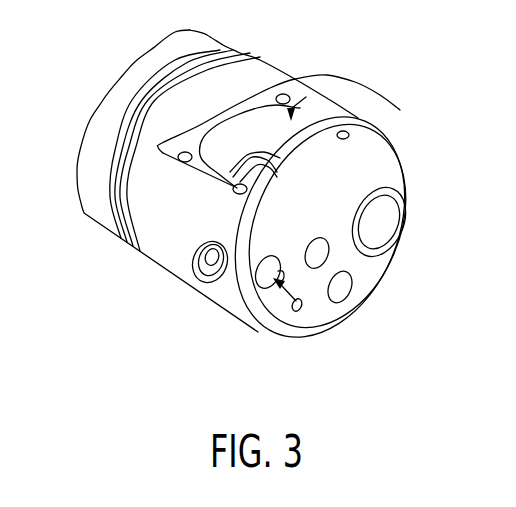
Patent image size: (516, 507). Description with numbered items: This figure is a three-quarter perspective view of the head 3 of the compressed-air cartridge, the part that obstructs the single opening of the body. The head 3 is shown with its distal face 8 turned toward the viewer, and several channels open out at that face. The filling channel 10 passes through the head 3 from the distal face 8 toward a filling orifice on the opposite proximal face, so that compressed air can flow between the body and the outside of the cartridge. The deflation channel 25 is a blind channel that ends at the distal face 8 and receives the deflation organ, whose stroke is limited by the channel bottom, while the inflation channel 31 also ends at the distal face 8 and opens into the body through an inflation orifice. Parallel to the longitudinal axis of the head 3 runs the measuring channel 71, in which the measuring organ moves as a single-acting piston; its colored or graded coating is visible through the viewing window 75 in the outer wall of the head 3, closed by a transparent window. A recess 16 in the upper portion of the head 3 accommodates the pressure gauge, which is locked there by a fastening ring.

The head 3 is at (140, 253).
The distal face 8 is at (357, 175).
The filling channel 10 is at (392, 224).
The recess 16 is at (400, 110).
The deflation channel 25 is at (352, 293).
The inflation channel 31 is at (338, 254).
The measuring channel 71 is at (298, 312).
The viewing window 75 is at (202, 275).